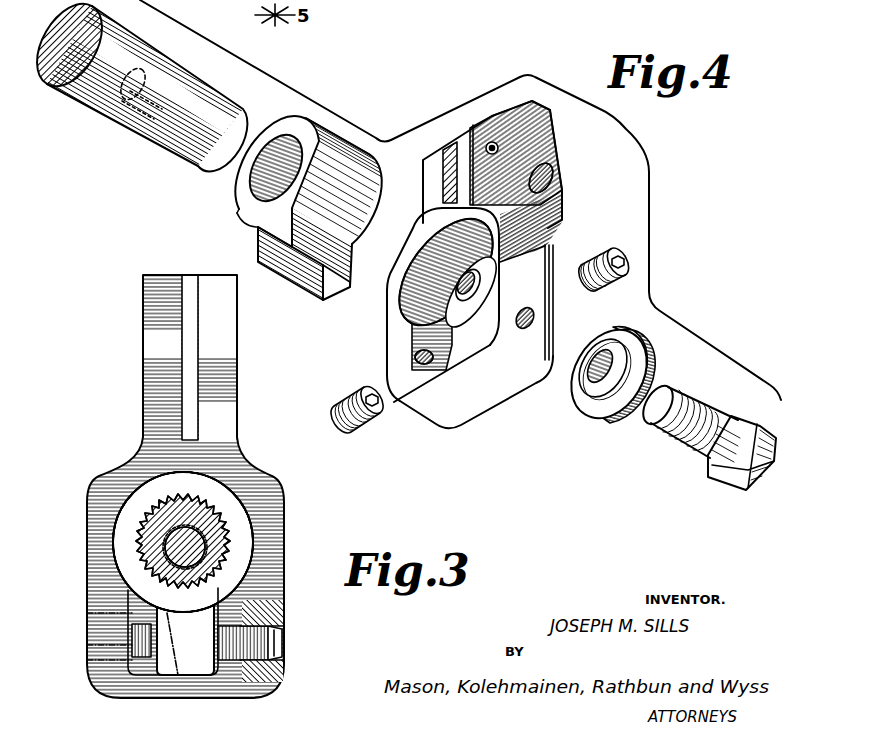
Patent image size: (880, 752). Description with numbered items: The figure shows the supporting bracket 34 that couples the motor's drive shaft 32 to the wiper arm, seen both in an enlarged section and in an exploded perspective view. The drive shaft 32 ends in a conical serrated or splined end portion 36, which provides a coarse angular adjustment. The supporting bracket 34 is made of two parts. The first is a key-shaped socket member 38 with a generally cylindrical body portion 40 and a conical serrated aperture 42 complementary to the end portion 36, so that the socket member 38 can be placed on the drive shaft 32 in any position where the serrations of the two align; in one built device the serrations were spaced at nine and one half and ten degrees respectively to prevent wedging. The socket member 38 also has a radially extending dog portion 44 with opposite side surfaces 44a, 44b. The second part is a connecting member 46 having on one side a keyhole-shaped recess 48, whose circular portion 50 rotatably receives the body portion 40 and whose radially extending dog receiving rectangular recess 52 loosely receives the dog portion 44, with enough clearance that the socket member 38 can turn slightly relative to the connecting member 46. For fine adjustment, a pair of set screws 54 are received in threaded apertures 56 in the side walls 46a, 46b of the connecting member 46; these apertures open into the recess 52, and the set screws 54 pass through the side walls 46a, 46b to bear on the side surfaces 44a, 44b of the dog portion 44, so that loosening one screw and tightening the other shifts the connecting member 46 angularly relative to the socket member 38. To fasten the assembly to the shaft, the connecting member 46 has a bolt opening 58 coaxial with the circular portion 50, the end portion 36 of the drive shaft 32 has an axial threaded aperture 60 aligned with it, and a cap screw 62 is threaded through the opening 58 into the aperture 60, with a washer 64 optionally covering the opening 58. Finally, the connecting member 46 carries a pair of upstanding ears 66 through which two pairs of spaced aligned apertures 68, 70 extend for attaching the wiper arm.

In FIG. 4, the drive shaft 32 is at (58, 90).
In FIG. 3, the drive shaft 32 is at (142, 535).
In FIG. 4, the supporting bracket 34 is at (538, 446).
In FIG. 4, the conical serrated end portion 36 is at (176, 152).
In FIG. 3, the conical serrated end portion 36 is at (128, 498).
In FIG. 4, the socket member 38 is at (306, 284).
In FIG. 3, the socket member 38 is at (145, 526).
In FIG. 4, the body portion 40 is at (368, 205).
In FIG. 3, the body portion 40 is at (191, 480).
In FIG. 4, the serrated aperture 42 is at (248, 187).
In FIG. 3, the serrated aperture 42 is at (205, 497).
In FIG. 4, the dog portion 44 is at (270, 240).
In FIG. 3, the dog portion 44 is at (185, 678).
In FIG. 4, the side surface of dog portion 44a is at (344, 270).
In FIG. 3, the side surface of dog portion 44a is at (223, 678).
In FIG. 4, the side surface of dog portion 44b is at (258, 231).
In FIG. 3, the side surface of dog portion 44b is at (128, 683).
In FIG. 4, the connecting member 46 is at (487, 416).
In FIG. 3, the connecting member 46 is at (92, 535).
In FIG. 4, the side wall 46a is at (547, 290).
In FIG. 3, the side wall 46a is at (285, 598).
In FIG. 4, the side wall 46b is at (420, 340).
In FIG. 3, the side wall 46b is at (98, 585).
In FIG. 4, the keyhole-shaped recess 48 is at (435, 240).
In FIG. 3, the keyhole-shaped recess 48 is at (268, 590).
In FIG. 4, the circular portion 50 is at (548, 244).
In FIG. 3, the circular portion 50 is at (262, 535).
In FIG. 4, the dog receiving rectangular recess 52 is at (445, 411).
In FIG. 3, the dog receiving rectangular recess 52 is at (130, 617).
In FIG. 4, the set screws 54 is at (358, 400).
In FIG. 3, the set screws 54 is at (130, 636).
In FIG. 4, the threaded apertures 56 is at (422, 357).
In FIG. 3, the threaded apertures 56 is at (280, 640).
In FIG. 4, the bolt opening 58 is at (470, 291).
In FIG. 4, the axial threaded aperture 60 is at (151, 111).
In FIG. 3, the axial threaded aperture 60 is at (236, 538).
In FIG. 4, the cap screw 62 is at (707, 445).
In FIG. 3, the cap screw 62 is at (206, 540).
In FIG. 4, the washer 64 is at (655, 410).
In FIG. 4, the upstanding ears 66 is at (430, 170).
In FIG. 3, the upstanding ears 66 is at (215, 280).
In FIG. 4, the aligned apertures 68 is at (500, 147).
In FIG. 4, the aligned apertures 70 is at (543, 178).